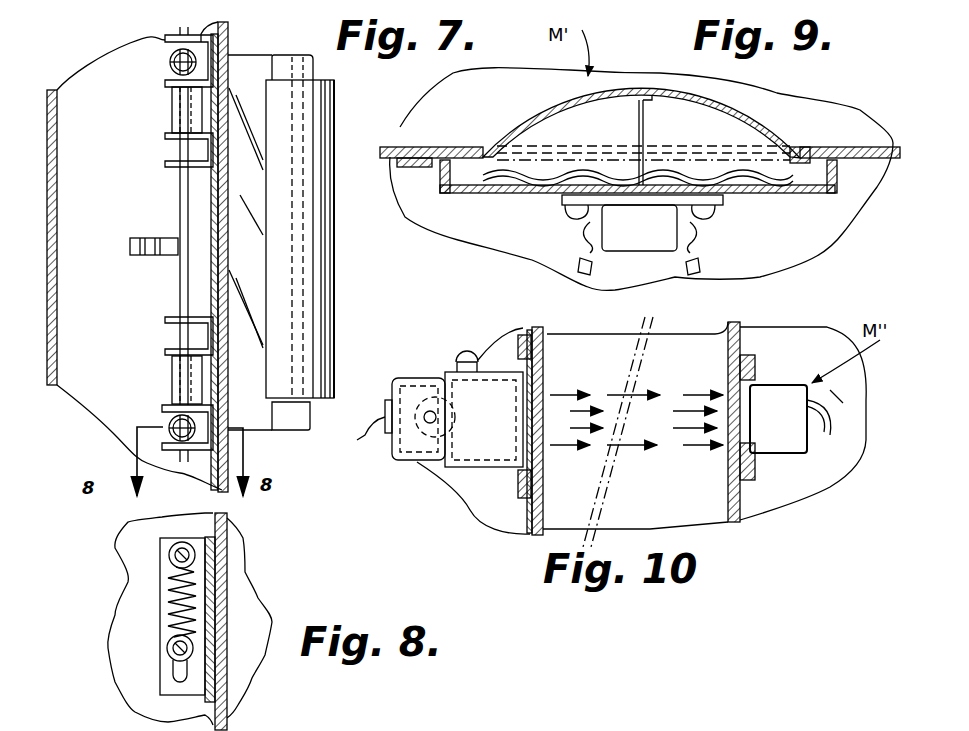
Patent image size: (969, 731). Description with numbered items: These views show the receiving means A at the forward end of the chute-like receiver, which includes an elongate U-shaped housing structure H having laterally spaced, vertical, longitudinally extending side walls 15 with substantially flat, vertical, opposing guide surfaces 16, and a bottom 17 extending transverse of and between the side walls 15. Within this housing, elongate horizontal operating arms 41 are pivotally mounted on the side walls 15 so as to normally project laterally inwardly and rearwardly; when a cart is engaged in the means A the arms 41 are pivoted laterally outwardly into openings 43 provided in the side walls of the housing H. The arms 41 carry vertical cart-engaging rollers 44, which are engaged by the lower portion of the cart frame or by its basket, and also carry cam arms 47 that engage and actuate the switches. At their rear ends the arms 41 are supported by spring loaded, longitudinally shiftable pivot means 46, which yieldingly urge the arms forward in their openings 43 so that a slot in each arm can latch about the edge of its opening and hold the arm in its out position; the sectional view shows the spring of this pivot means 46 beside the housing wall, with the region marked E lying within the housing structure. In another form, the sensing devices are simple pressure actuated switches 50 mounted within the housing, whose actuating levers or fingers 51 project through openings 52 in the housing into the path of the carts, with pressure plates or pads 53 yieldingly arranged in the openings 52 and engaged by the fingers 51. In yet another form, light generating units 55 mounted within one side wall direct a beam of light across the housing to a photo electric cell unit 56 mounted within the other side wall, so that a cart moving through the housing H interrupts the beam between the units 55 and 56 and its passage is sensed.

In FIG. 9, the side walls 15 is at (400, 147).
In FIG. 10, the side walls 15 is at (740, 337).
In FIG. 7, the guide surfaces 16 is at (228, 33).
In FIG. 8, the guide surfaces 16 is at (223, 615).
In FIG. 9, the guide surfaces 16 is at (847, 150).
In FIG. 10, the guide surfaces 16 is at (718, 330).
In FIG. 8, the bottom 17 is at (237, 593).
In FIG. 9, the bottom 17 is at (470, 98).
In FIG. 10, the bottom 17 is at (667, 350).
In FIG. 7, the operating arms 41 is at (260, 255).
In FIG. 7, the openings 43 is at (222, 368).
In FIG. 7, the cart-engaging rollers 44 is at (315, 282).
In FIG. 7, the spring loaded, longitudinally shiftable pivot means 46 is at (160, 88).
In FIG. 8, the spring loaded, longitudinally shiftable pivot means 46 is at (157, 603).
In FIG. 7, the cam arms 47 is at (147, 256).
In FIG. 9, the pressure actuated switches 50 is at (660, 230).
In FIG. 9, the actuating levers or fingers 51 is at (639, 125).
In FIG. 9, the openings 52 is at (773, 145).
In FIG. 9, the pressure plates or pads 53 is at (663, 90).
In FIG. 10, the light generating units 55 is at (467, 440).
In FIG. 10, the photo electric cell unit 56 is at (783, 455).
In FIG. 7, the enclosure E is at (155, 200).
In FIG. 8, the enclosure E is at (137, 638).
In FIG. 7, the housing structure H is at (93, 421).
In FIG. 8, the housing structure H is at (110, 697).
In FIG. 9, the housing structure H is at (810, 228).
In FIG. 10, the housing structure H is at (823, 333).
In FIG. 9, the receiving means A is at (820, 90).